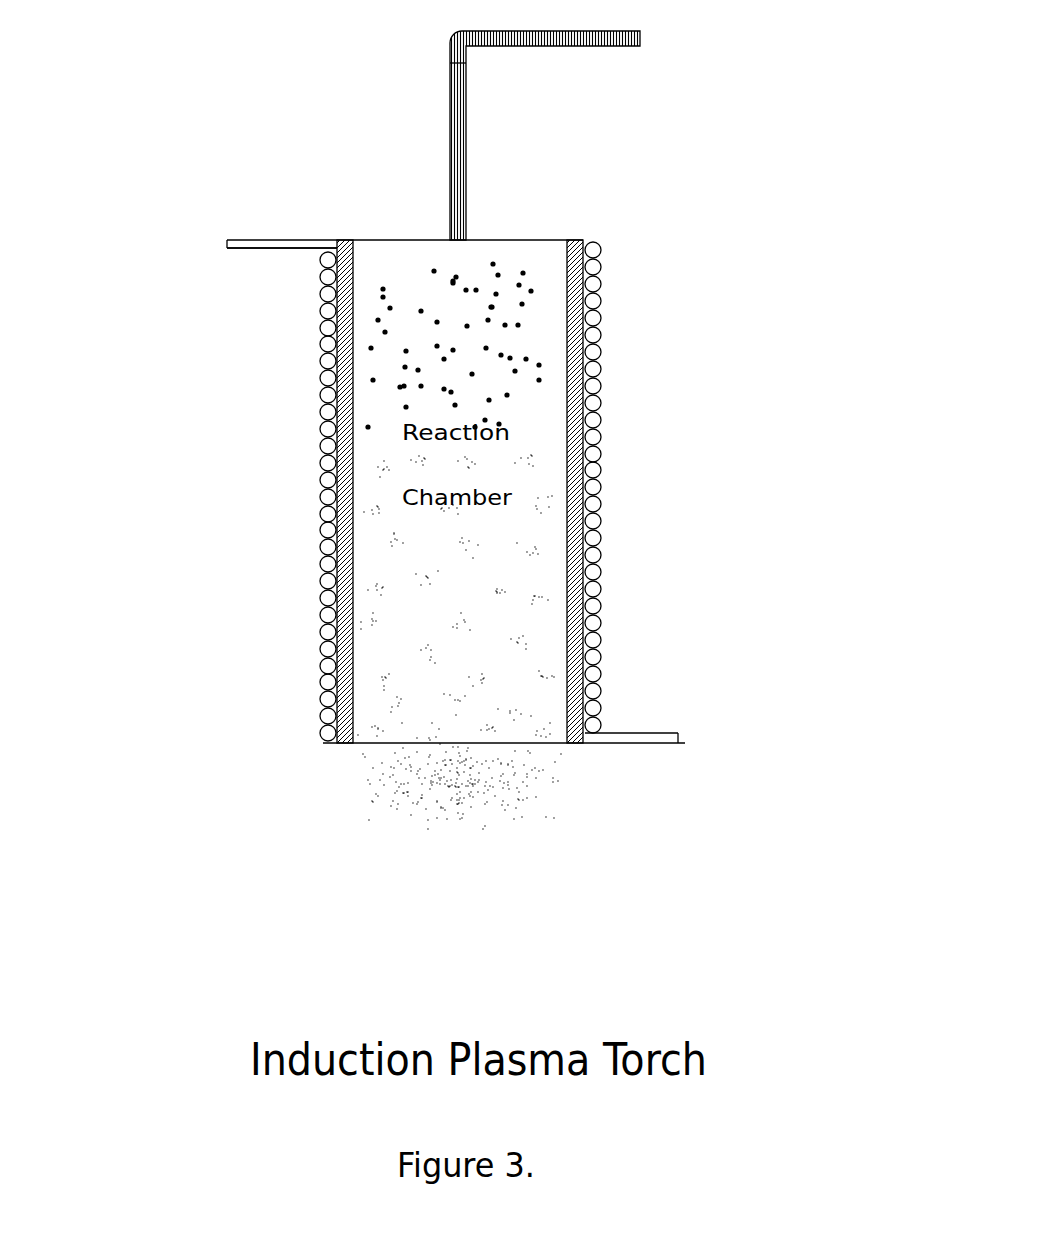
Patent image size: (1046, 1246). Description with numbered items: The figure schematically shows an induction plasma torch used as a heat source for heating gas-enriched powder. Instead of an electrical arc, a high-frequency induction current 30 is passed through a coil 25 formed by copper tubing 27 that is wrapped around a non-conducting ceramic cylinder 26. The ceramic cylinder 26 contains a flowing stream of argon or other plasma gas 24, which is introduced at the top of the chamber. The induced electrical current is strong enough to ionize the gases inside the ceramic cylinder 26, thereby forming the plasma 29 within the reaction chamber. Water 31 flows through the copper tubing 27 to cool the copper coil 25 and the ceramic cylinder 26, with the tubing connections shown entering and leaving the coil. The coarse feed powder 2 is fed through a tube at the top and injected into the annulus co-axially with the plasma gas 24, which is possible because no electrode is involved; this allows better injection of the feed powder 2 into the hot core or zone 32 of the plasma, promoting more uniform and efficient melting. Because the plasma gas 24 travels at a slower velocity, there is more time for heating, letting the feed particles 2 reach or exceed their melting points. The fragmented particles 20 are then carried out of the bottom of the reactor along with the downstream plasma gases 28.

The coarse feed powder 2 is at (660, 43).
The fragmented particles 20 is at (462, 799).
The plasma gas 24 is at (365, 210).
The coil 25 is at (635, 335).
The ceramic cylinder 26 is at (613, 480).
The copper tubing 27 is at (635, 740).
The downstream plasma gases 28 is at (406, 808).
The plasma 29 is at (505, 276).
The high-frequency induction current 30 is at (212, 242).
The water 31 is at (191, 262).
The hot core of the plasma 32 is at (540, 610).